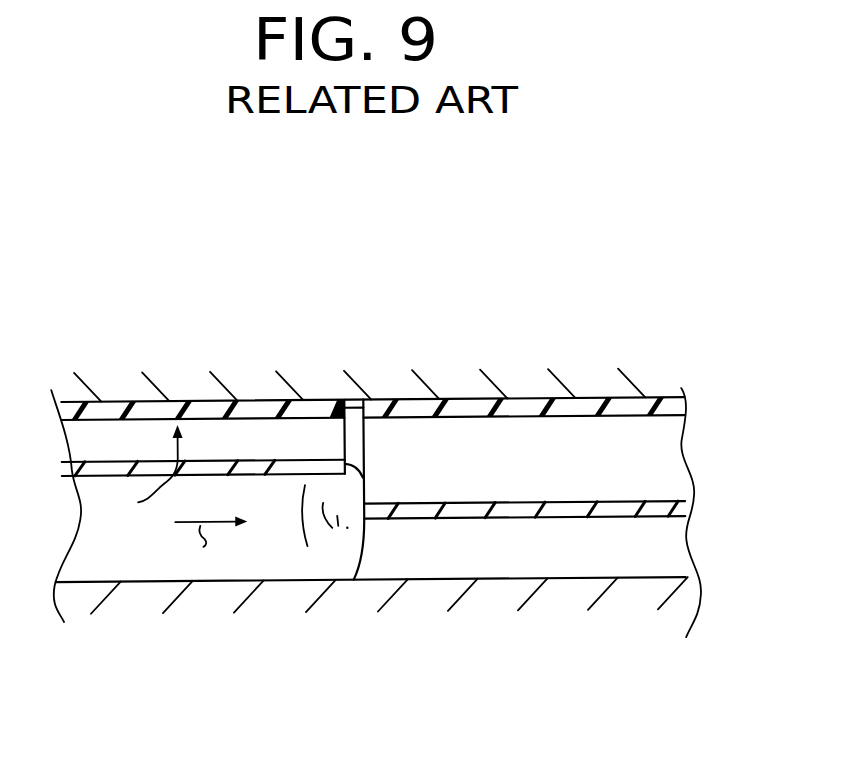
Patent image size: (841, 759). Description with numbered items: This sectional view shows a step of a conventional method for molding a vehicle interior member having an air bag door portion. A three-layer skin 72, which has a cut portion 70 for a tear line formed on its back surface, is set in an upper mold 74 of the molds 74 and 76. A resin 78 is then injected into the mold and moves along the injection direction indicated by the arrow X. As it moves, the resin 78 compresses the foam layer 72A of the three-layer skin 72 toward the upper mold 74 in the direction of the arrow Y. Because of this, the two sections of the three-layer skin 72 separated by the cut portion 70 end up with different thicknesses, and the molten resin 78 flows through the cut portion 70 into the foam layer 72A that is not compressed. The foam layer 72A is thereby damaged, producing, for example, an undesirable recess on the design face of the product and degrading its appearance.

The cut portion 70 is at (361, 430).
The three-layer skin 72 is at (653, 396).
The foam layer 72A is at (243, 440).
The upper mold 74 is at (517, 388).
The mold 76 is at (562, 590).
The resin 78 is at (180, 563).